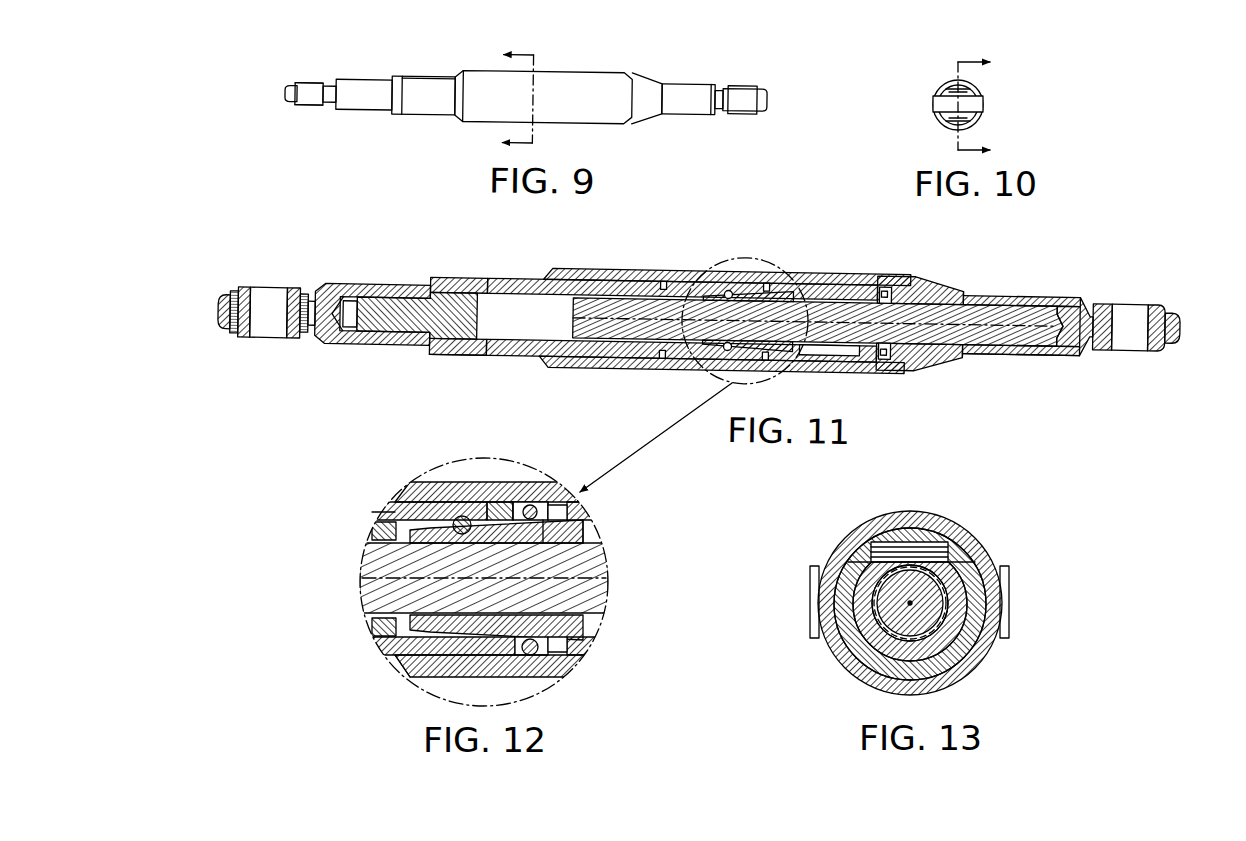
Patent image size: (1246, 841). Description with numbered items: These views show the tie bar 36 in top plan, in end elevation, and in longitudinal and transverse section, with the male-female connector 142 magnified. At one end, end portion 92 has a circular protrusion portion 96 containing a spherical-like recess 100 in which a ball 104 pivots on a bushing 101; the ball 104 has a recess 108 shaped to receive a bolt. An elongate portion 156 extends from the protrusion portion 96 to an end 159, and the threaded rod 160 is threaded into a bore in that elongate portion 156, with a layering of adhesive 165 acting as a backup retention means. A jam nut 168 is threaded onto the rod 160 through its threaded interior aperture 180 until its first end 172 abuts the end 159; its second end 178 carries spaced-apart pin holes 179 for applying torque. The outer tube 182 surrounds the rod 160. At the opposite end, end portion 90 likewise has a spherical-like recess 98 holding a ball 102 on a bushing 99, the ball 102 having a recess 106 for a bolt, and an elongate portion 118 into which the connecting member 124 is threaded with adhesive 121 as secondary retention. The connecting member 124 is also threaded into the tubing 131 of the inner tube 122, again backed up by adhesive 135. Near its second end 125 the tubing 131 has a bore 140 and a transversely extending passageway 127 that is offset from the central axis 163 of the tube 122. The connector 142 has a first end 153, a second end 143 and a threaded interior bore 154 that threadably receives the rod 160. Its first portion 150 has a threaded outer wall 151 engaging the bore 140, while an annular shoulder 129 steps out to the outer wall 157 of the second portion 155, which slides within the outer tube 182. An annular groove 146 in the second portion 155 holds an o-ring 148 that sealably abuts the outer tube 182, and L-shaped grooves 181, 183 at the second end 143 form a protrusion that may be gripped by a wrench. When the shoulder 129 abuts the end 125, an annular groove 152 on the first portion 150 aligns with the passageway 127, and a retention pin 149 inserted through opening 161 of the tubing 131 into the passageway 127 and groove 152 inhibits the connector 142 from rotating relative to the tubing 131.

In FIG. 9, the tie bar 36 is at (623, 62).
In FIG. 10, the tie bar 36 is at (1000, 100).
In FIG. 11, the tie bar 36 is at (1150, 228).
In FIG. 12, the tie bar 36 is at (640, 640).
In FIG. 13, the tie bar 36 is at (1050, 518).
In FIG. 9, the end portion 90 is at (276, 112).
In FIG. 11, the end portion 90 is at (257, 313).
In FIG. 9, the end portion 92 is at (763, 112).
In FIG. 10, the end portion 92 is at (928, 100).
In FIG. 11, the end portion 92 is at (1130, 372).
In FIG. 10, the circular protrusion portion 96 is at (940, 108).
In FIG. 11, the spherical-like recess 98 is at (240, 295).
In FIG. 11, the bushing 99 is at (226, 338).
In FIG. 11, the spherical-like recess 100 is at (1160, 297).
In FIG. 11, the bushing 101 is at (1172, 335).
In FIG. 9, the ball 102 is at (322, 84).
In FIG. 11, the ball 102 is at (295, 295).
In FIG. 9, the ball 104 is at (752, 84).
In FIG. 11, the ball 104 is at (1103, 297).
In FIG. 11, the recess 106 is at (267, 295).
In FIG. 11, the recess 108 is at (1133, 297).
In FIG. 9, the elongate portion 118 is at (358, 112).
In FIG. 11, the elongate portion 118 is at (350, 350).
In FIG. 11, the adhesive 121 is at (400, 337).
In FIG. 9, the inner tube 122 is at (433, 76).
In FIG. 11, the inner tube 122 is at (520, 282).
In FIG. 12, the inner tube 122 is at (385, 512).
In FIG. 13, the inner tube 122 is at (836, 558).
In FIG. 11, the connecting member 124 is at (400, 303).
In FIG. 12, the second end 125 is at (580, 655).
In FIG. 12, the passageway 127 is at (443, 510).
In FIG. 13, the passageway 127 is at (866, 546).
In FIG. 12, the annular shoulder 129 is at (525, 655).
In FIG. 9, the tubing 131 is at (428, 104).
In FIG. 11, the tubing 131 is at (462, 282).
In FIG. 12, the tubing 131 is at (400, 508).
In FIG. 13, the tubing 131 is at (830, 592).
In FIG. 11, the adhesive 135 is at (450, 359).
In FIG. 12, the bore 140 is at (395, 637).
In FIG. 11, the male-female connector 142 is at (783, 290).
In FIG. 12, the male-female connector 142 is at (570, 515).
In FIG. 13, the male-female connector 142 is at (967, 592).
In FIG. 12, the second end 143 is at (593, 545).
In FIG. 12, the annular groove 146 is at (552, 512).
In FIG. 12, the o-ring 148 is at (533, 505).
In FIG. 11, the retention pin 149 is at (725, 292).
In FIG. 12, the retention pin 149 is at (460, 518).
In FIG. 13, the retention pin 149 is at (953, 545).
In FIG. 11, the first portion 150 is at (720, 350).
In FIG. 12, the first portion 150 is at (425, 670).
In FIG. 12, the outer wall 151 is at (395, 655).
In FIG. 12, the annular groove 152 is at (495, 504).
In FIG. 13, the annular groove 152 is at (960, 562).
In FIG. 12, the first end 153 is at (395, 533).
In FIG. 12, the threaded interior bore 154 is at (595, 600).
In FIG. 11, the second portion 155 is at (775, 350).
In FIG. 12, the second portion 155 is at (543, 520).
In FIG. 9, the end tube 156 is at (683, 112).
In FIG. 11, the end tube 156 is at (1005, 349).
In FIG. 12, the outer wall 157 is at (513, 510).
In FIG. 11, the end 159 is at (965, 288).
In FIG. 11, the threaded rod 160 is at (848, 300).
In FIG. 12, the threaded rod 160 is at (575, 590).
In FIG. 13, the threaded rod 160 is at (832, 658).
In FIG. 13, the opening 161 is at (965, 540).
In FIG. 13, the central axis 163 is at (923, 605).
In FIG. 11, the adhesive 165 is at (1018, 291).
In FIG. 9, the jam nut 168 is at (650, 78).
In FIG. 10, the jam nut 168 is at (940, 88).
In FIG. 11, the jam nut 168 is at (937, 282).
In FIG. 11, the first end 172 is at (975, 349).
In FIG. 11, the second end 178 is at (882, 358).
In FIG. 11, the pin holes 179 is at (850, 352).
In FIG. 11, the threaded interior aperture 180 is at (887, 284).
In FIG. 12, the L-shaped groove 181 is at (580, 535).
In FIG. 9, the outer tube 182 is at (560, 70).
In FIG. 10, the outer tube 182 is at (948, 85).
In FIG. 11, the outer tube 182 is at (640, 271).
In FIG. 12, the outer tube 182 is at (435, 478).
In FIG. 13, the outer tube 182 is at (910, 505).
In FIG. 12, the L-shaped groove 183 is at (570, 645).